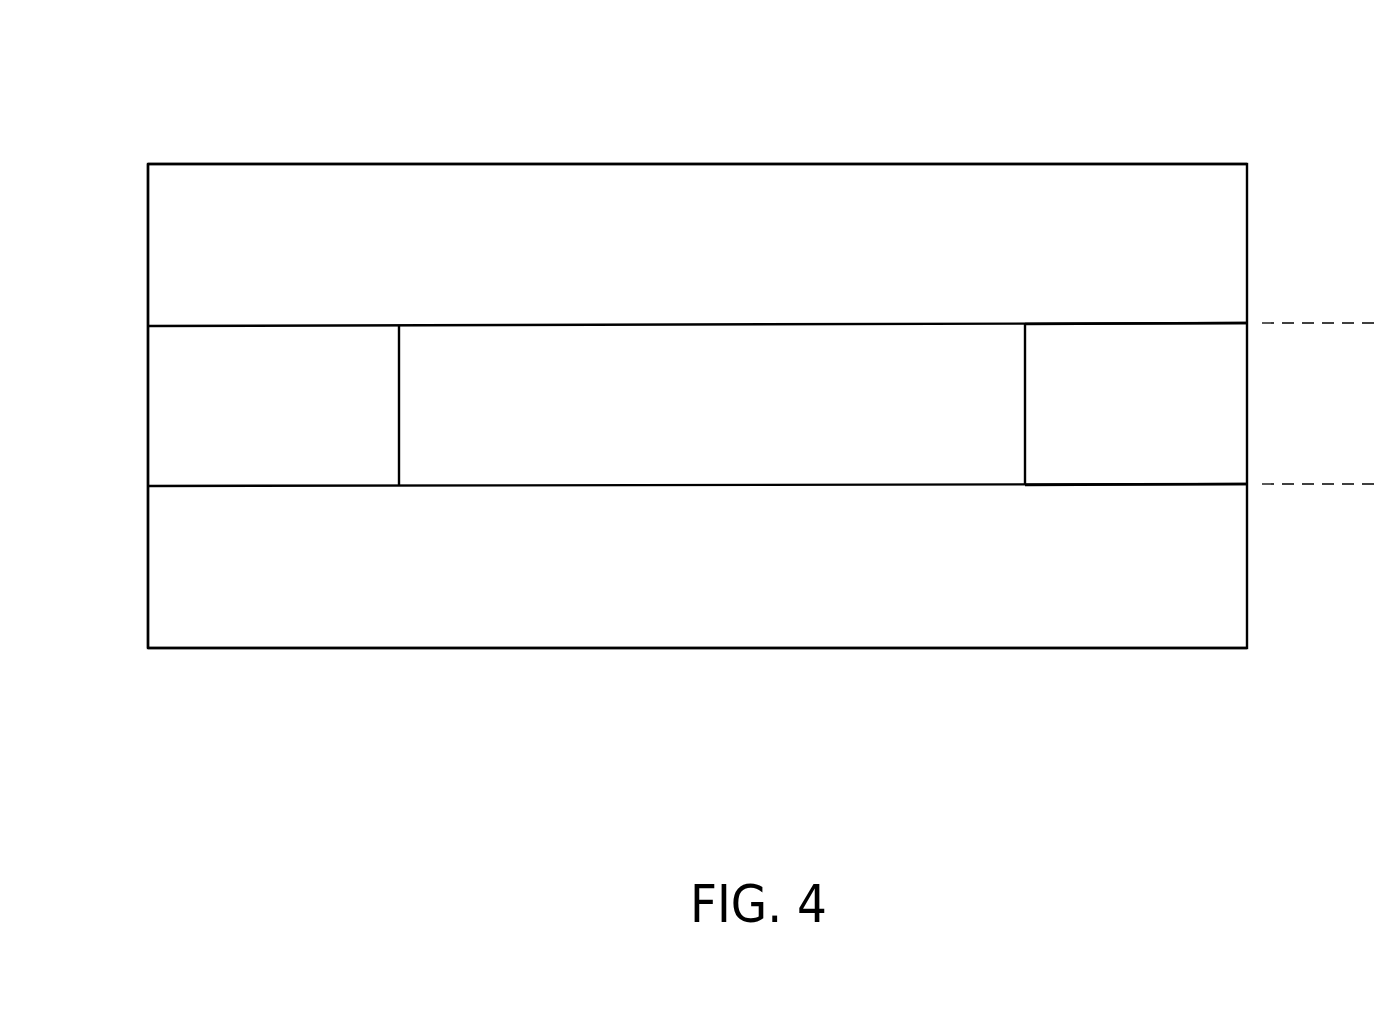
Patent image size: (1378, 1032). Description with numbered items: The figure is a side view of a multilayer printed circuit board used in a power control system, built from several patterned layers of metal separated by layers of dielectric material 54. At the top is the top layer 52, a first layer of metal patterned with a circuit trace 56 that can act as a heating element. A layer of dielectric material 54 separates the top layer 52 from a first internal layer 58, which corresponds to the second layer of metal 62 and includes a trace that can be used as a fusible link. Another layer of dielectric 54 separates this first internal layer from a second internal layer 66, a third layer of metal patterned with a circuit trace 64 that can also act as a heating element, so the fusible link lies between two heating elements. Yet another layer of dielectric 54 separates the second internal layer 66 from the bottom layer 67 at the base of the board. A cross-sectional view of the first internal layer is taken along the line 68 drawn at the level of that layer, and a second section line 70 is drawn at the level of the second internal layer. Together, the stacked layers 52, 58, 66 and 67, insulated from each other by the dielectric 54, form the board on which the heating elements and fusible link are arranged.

The top layer 52 is at (1057, 162).
The layer of dielectric material 54 is at (147, 250).
The circuit trace 56 is at (307, 163).
The first internal layer 58 is at (667, 325).
The second layer of metal 62 is at (1128, 323).
The circuit trace 64 is at (658, 486).
The second internal layer 66 is at (1128, 485).
The bottom layer 67 is at (337, 648).
The line 68 is at (1377, 333).
The lower plane 70 is at (1358, 485).